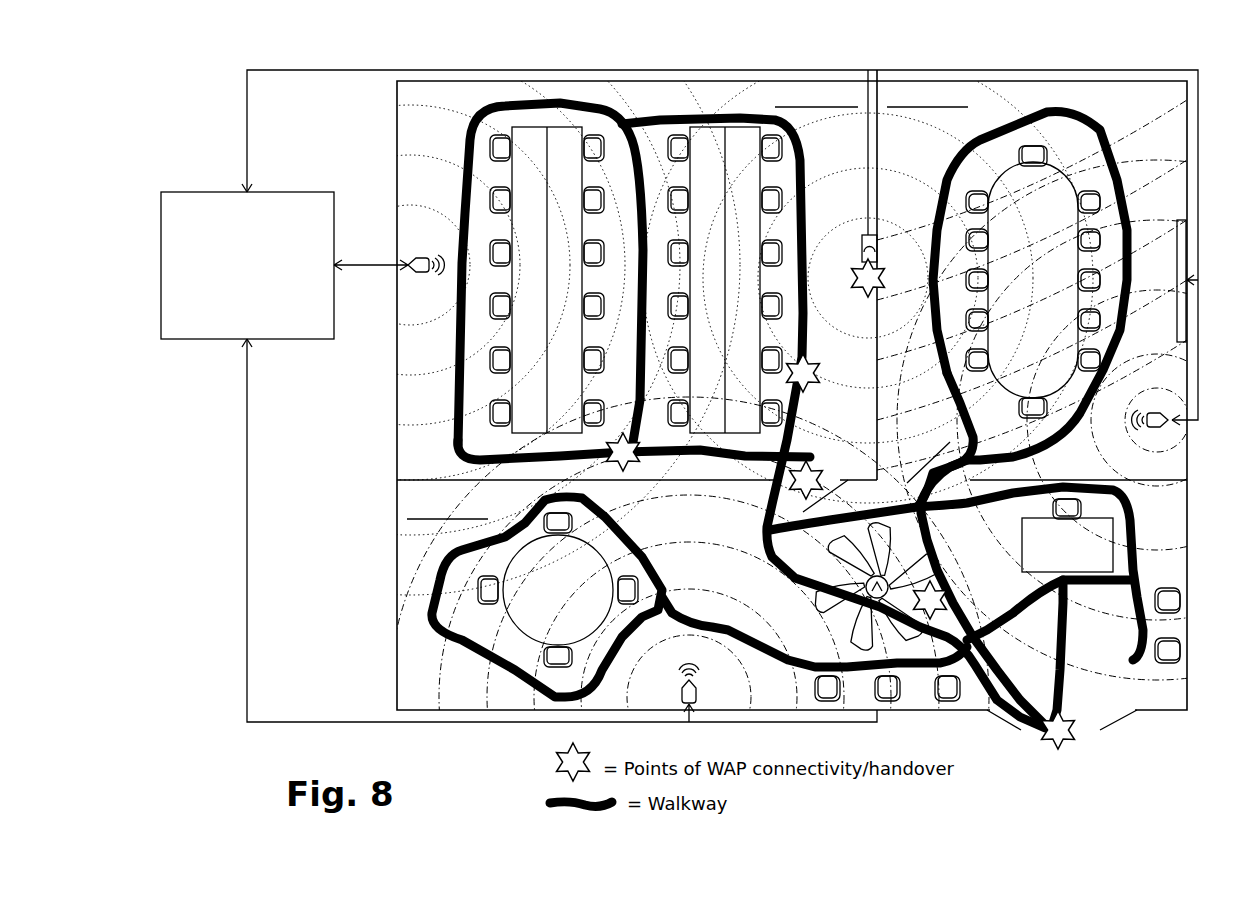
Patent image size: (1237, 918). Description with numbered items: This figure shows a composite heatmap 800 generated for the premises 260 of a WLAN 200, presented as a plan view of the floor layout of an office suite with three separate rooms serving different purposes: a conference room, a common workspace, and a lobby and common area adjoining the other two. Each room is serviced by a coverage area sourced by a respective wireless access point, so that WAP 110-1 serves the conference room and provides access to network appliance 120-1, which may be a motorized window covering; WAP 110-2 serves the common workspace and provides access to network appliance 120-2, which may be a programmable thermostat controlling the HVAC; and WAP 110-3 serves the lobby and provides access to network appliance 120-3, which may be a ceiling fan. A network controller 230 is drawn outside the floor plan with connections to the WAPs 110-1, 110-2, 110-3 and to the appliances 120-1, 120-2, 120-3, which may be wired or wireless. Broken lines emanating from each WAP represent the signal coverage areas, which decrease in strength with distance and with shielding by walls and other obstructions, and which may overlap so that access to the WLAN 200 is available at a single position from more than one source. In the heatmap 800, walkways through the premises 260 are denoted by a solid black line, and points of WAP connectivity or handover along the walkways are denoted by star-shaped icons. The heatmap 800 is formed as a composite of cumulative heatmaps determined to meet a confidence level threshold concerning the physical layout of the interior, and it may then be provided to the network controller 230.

The WLAN 200 is at (240, 50).
The heatmap 800 is at (762, 47).
The network controller 230 is at (265, 301).
The WAP 110-1 is at (1133, 426).
The WAP 110-2 is at (414, 257).
The WAP 110-3 is at (680, 682).
The network appliance 120-1 is at (1175, 242).
The network appliance 120-2 is at (860, 240).
The network appliance 120-3 is at (864, 626).
The premises 260 is at (1052, 750).